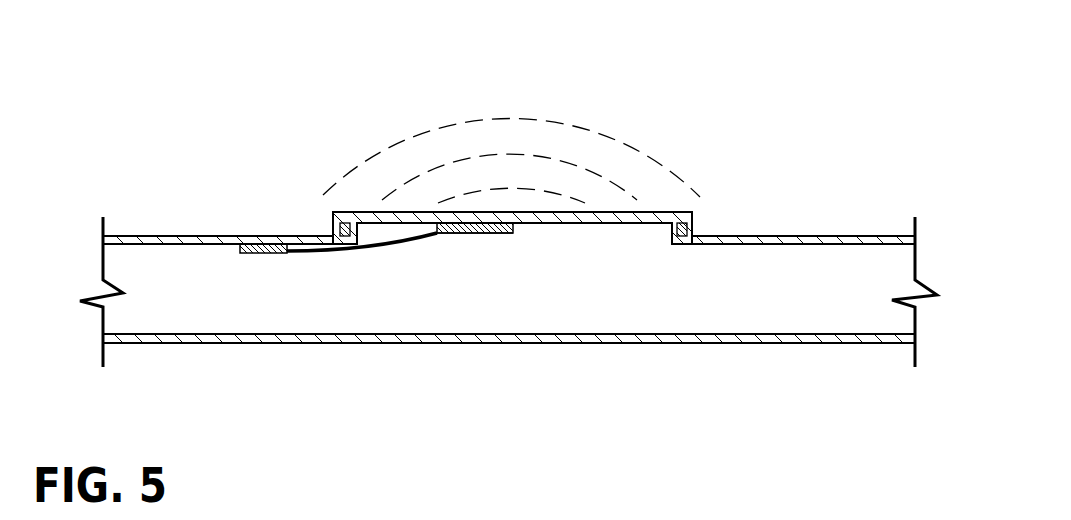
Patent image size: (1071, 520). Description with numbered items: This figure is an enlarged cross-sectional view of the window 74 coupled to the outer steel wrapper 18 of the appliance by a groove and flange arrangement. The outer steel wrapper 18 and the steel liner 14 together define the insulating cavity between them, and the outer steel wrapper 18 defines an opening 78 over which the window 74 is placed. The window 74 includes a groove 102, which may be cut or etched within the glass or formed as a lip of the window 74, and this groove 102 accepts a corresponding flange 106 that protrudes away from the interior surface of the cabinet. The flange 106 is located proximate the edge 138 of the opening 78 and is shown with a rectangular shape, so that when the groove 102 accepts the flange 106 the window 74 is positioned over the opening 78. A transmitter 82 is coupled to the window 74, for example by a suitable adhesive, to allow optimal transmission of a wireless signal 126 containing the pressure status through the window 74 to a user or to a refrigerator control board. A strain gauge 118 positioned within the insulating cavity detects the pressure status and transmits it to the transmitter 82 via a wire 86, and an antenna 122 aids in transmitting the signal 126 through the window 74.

The steel liner 14 is at (375, 343).
The outer steel wrapper 18 is at (200, 235).
The window 74 is at (606, 224).
The opening 78 is at (507, 261).
The transmitter 82 is at (480, 222).
The wire 86 is at (410, 247).
The groove 102 is at (347, 223).
The flange 106 is at (333, 226).
The strain gauge 118 is at (258, 243).
The antenna 122 is at (513, 233).
The wireless signal 126 is at (583, 113).
The edge 138 is at (695, 246).